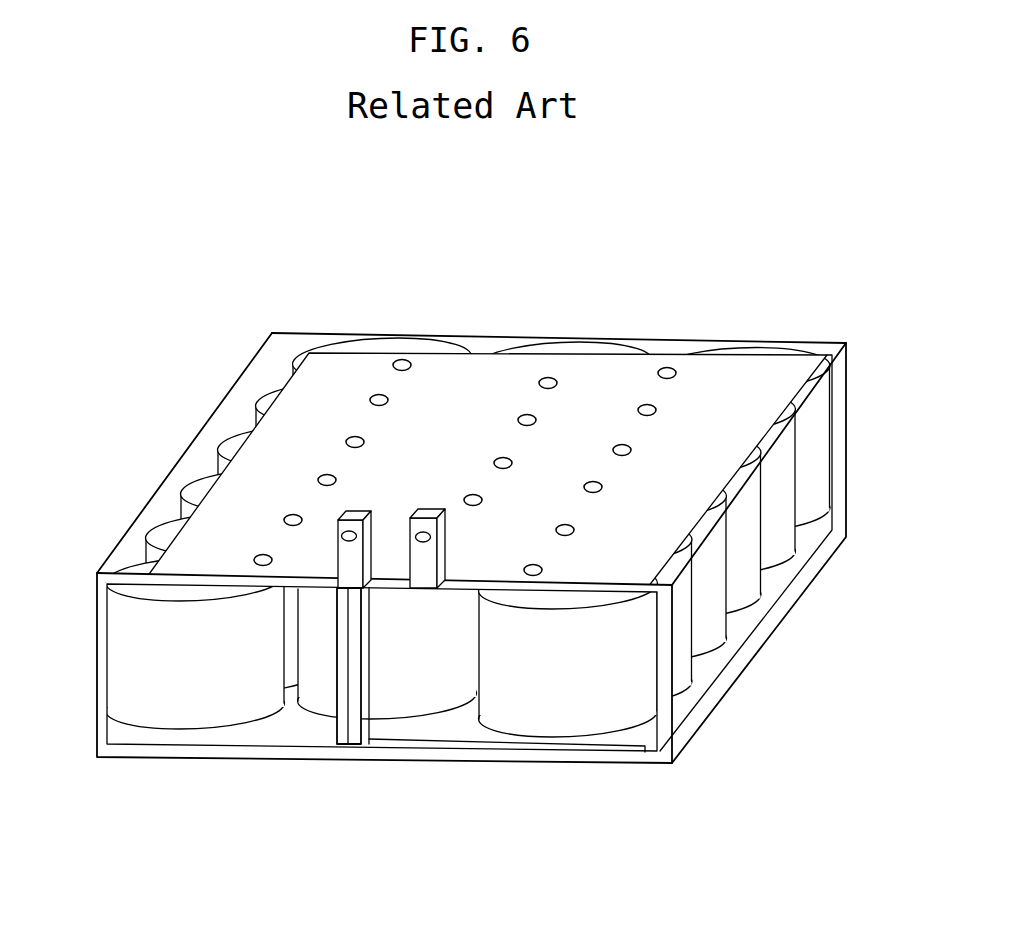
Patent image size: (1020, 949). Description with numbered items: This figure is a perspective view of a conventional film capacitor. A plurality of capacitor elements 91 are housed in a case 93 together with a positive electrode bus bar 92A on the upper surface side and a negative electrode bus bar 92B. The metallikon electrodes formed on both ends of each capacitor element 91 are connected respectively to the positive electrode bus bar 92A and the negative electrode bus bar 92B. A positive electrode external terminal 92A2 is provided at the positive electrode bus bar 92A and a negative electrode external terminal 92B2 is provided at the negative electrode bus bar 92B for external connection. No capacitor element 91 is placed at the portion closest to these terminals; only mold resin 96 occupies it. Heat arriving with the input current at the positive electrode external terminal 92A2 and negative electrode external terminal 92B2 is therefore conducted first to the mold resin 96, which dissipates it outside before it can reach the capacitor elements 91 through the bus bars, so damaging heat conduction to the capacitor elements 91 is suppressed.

The capacitor element 91 is at (558, 728).
The positive electrode bus bar 92A is at (632, 368).
The positive electrode external terminal 92A2 is at (430, 508).
The negative electrode bus bar 92B is at (427, 733).
The negative electrode external terminal 92B2 is at (350, 730).
The case 93 is at (192, 442).
The mold resin 96 is at (112, 725).